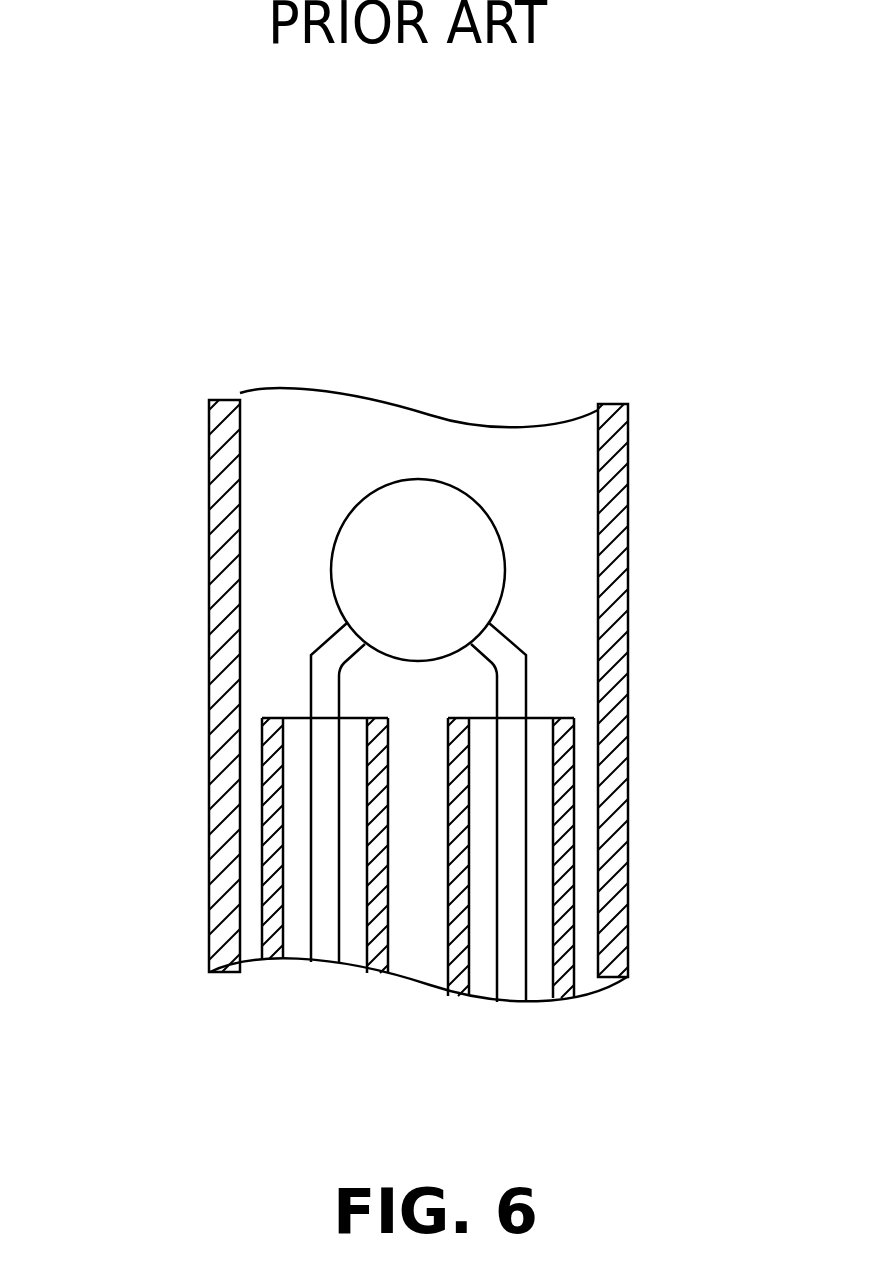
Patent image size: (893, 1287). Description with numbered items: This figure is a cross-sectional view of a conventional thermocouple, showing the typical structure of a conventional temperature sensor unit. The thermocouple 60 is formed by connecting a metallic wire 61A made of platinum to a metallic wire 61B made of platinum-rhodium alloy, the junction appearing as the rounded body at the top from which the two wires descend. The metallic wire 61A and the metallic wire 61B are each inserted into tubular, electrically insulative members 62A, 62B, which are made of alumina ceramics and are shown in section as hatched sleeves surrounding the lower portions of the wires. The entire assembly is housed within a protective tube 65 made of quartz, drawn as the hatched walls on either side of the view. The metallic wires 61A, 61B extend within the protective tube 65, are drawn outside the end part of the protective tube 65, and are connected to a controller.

The thermocouple 60 is at (312, 548).
The metallic wire 61A is at (325, 653).
The metallic wire 61B is at (512, 670).
The tubular electrically insulative member 62A is at (262, 820).
The tubular electrically insulative member 62B is at (567, 822).
The protective tube 65 is at (628, 593).